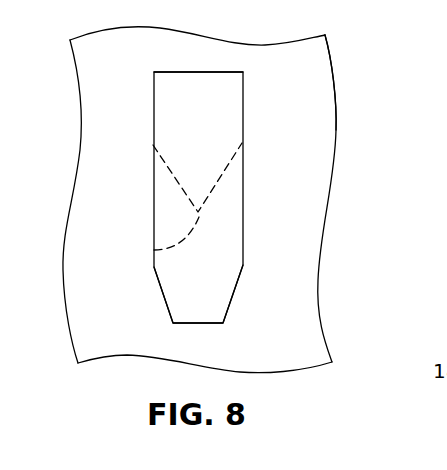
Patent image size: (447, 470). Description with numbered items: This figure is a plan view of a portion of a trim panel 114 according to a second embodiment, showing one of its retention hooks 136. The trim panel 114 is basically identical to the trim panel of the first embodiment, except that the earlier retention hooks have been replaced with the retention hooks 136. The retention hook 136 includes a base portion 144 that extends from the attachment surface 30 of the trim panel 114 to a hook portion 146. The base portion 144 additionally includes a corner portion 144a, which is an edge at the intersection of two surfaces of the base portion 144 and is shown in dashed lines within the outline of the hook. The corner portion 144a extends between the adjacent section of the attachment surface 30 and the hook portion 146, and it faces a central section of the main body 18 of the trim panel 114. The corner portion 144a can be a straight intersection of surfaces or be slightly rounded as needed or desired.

The trim panel 114 is at (334, 60).
The attachment surface 30 is at (297, 138).
The main body 18 is at (280, 345).
The retention hook 136 is at (178, 92).
The base portion 144 is at (225, 100).
The corner portion 144a is at (154, 250).
The hook portion 146 is at (202, 300).